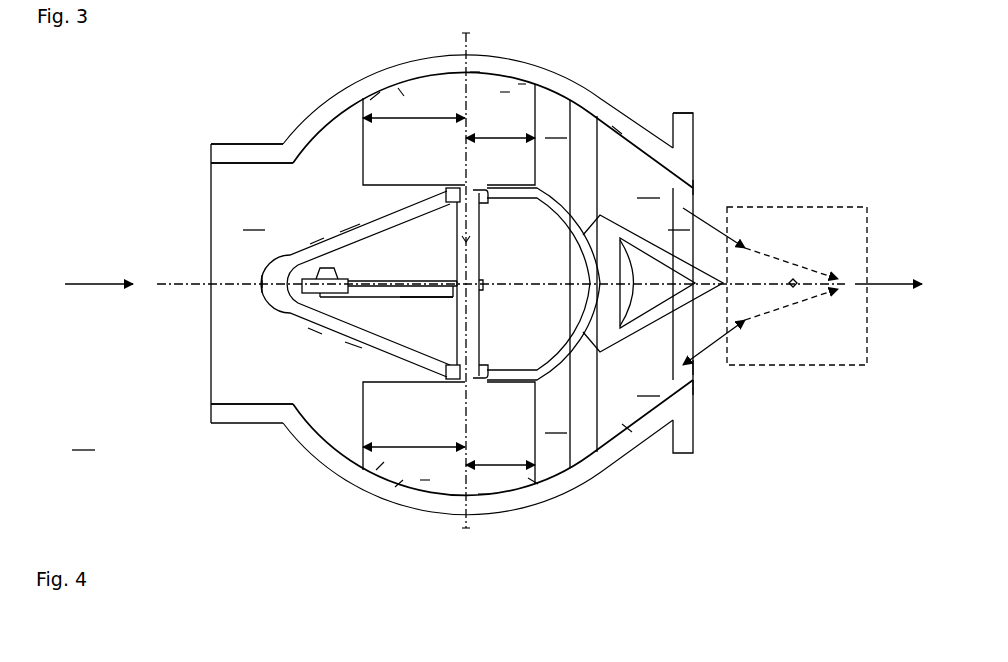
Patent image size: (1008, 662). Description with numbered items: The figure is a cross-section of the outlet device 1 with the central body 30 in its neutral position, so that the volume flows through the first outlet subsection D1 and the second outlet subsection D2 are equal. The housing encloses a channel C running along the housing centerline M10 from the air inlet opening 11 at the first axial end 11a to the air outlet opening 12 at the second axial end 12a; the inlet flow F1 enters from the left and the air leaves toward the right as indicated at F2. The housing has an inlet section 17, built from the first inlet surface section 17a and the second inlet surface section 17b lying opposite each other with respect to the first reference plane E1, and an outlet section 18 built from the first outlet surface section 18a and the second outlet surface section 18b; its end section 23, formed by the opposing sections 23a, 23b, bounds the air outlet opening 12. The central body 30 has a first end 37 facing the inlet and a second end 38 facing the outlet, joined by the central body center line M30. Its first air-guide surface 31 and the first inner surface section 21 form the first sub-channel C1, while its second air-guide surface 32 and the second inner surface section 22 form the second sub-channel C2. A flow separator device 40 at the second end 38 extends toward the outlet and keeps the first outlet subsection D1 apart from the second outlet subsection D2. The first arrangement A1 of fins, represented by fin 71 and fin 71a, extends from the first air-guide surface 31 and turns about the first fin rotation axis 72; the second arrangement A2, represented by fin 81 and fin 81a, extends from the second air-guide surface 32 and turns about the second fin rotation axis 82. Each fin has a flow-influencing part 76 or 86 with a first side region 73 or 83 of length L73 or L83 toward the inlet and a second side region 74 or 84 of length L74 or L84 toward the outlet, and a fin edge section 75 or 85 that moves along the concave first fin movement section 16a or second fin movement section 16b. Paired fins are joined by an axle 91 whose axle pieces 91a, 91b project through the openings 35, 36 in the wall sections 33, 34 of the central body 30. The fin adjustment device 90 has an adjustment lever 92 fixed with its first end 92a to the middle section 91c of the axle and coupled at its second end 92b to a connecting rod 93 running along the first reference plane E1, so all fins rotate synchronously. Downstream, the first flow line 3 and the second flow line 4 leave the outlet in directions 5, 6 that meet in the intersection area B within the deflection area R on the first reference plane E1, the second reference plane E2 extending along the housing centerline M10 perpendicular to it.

The outlet device 1 is at (276, 64).
The first flow line 3 is at (780, 262).
The second flow line 4 is at (770, 313).
The direction of the first flow line 5 is at (691, 234).
The direction of the second flow line 6 is at (730, 331).
The air inlet opening 11 is at (205, 190).
The first axial end 11a is at (210, 153).
The air outlet opening 12 is at (704, 195).
The second axial end 12a is at (693, 166).
The first fin movement section 16a is at (399, 86).
The second fin movement section 16b is at (382, 466).
The inlet section 17 is at (255, 220).
The first inlet surface section 17a is at (258, 170).
The second inlet surface section 17b is at (244, 404).
The outlet section 18 is at (680, 220).
The first outlet surface section 18a is at (625, 140).
The second outlet surface section 18b is at (625, 425).
The first inner surface section 21 is at (338, 124).
The second inner surface section 22 is at (328, 432).
The end section 23 is at (697, 363).
The section of the end section 23a is at (696, 188).
The section of the end section 23b is at (703, 380).
The central body 30 is at (247, 262).
The first air-guide surface 31 is at (316, 236).
The second air-guide surface 32 is at (313, 328).
The wall section 33 is at (354, 230).
The wall section 34 is at (352, 345).
The opening 35 is at (455, 187).
The opening 36 is at (458, 382).
The first end 37 is at (252, 291).
The second end 38 is at (612, 291).
The flow separator device 40 is at (678, 308).
The fin 71 is at (476, 70).
The fin 71a is at (522, 84).
The first fin rotation axis 72 is at (463, 33).
The first side region 73 is at (370, 172).
The second side region 74 is at (522, 153).
The fin edge section 75 is at (377, 90).
The flow-influencing part 76 is at (505, 90).
The fin 81 is at (484, 496).
The fin 81a is at (530, 478).
The second fin rotation axis 82 is at (465, 523).
The first side region 83 is at (370, 415).
The second side region 84 is at (529, 446).
The fin edge section 85 is at (400, 484).
The flow-influencing part 86 is at (421, 478).
The fin adjustment device 90 is at (395, 248).
The axle 91 is at (512, 259).
The axle piece 91a is at (488, 200).
The axle piece 91b is at (484, 373).
The middle section 91c is at (474, 306).
The adjustment lever 92 is at (366, 281).
The first end 92a is at (453, 298).
The second end 92b is at (318, 297).
The connecting rod 93 is at (333, 272).
The first arrangement of at least one fin A1 is at (352, 147).
The second arrangement of at least one fin A2 is at (345, 445).
The intersection area B is at (790, 283).
The channel C is at (241, 178).
The first sub-channel C1 is at (557, 128).
The second sub-channel C2 is at (557, 423).
The first outlet subsection D1 is at (650, 188).
The second outlet subsection D2 is at (650, 386).
The first reference plane E1 is at (190, 295).
The second reference plane E2 is at (84, 440).
The inlet flow F1 is at (99, 271).
The outflow direction F2 is at (888, 271).
The length of the first side region L73 is at (414, 132).
The length of the second side region L74 is at (500, 127).
The length of the first side region L83 is at (414, 460).
The length of the second side region L84 is at (500, 452).
The housing centerline M10 is at (175, 283).
The central body center line M30 is at (502, 267).
The deflection area R is at (808, 365).